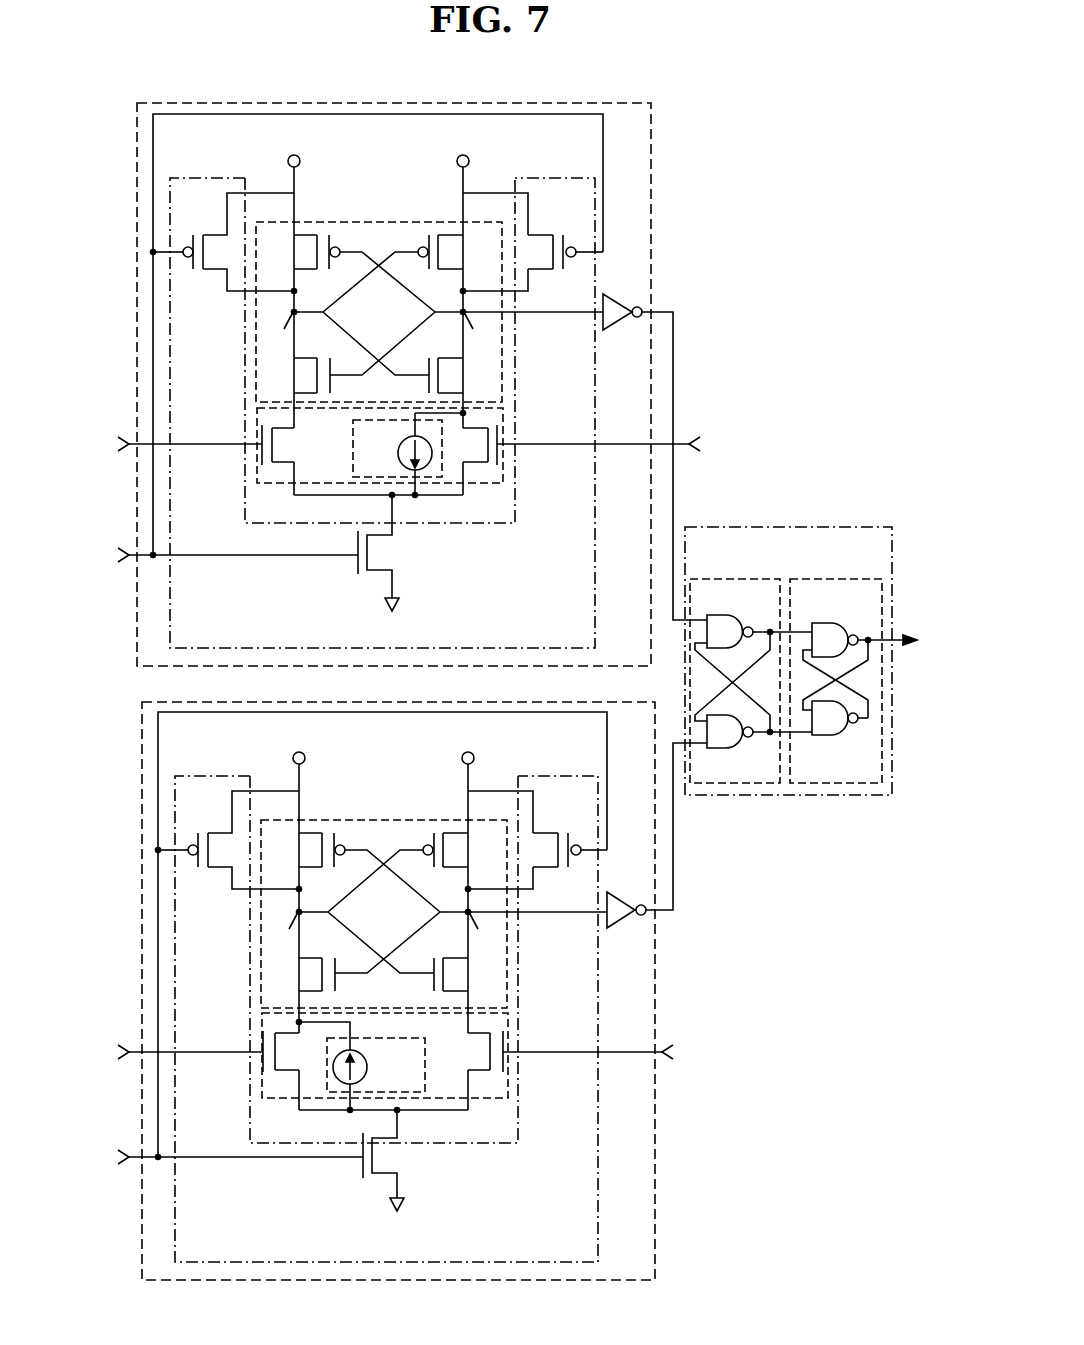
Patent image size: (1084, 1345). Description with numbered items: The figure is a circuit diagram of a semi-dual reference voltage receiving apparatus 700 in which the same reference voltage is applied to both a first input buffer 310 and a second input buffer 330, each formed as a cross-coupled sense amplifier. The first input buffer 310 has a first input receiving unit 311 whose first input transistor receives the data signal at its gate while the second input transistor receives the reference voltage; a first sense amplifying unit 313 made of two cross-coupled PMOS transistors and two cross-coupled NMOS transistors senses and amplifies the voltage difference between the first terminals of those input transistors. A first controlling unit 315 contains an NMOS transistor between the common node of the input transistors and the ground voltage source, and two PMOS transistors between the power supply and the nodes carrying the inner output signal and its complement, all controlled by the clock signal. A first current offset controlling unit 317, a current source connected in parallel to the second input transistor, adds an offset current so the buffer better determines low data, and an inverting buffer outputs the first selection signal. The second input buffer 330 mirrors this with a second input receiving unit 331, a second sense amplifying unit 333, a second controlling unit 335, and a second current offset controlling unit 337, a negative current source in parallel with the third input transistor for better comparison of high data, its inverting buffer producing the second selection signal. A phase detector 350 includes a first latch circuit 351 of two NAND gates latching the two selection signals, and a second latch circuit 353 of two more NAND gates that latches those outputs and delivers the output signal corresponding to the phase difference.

The semi-dual reference voltage receiving apparatus 700 is at (708, 82).
The first input buffer 310 is at (137, 172).
The first input receiving unit 311 is at (488, 483).
The first sense amplifying unit 313 is at (377, 222).
The first controlling unit 315 is at (598, 590).
The first current offset controlling unit 317 is at (348, 458).
The second input buffer 330 is at (142, 775).
The second input receiving unit 331 is at (490, 1098).
The second sense amplifying unit 333 is at (382, 820).
The second controlling unit 335 is at (599, 1188).
The second current offset controlling unit 337 is at (383, 1038).
The phase detector 350 is at (813, 527).
The first latch circuit 351 is at (750, 579).
The second latch circuit 353 is at (842, 579).